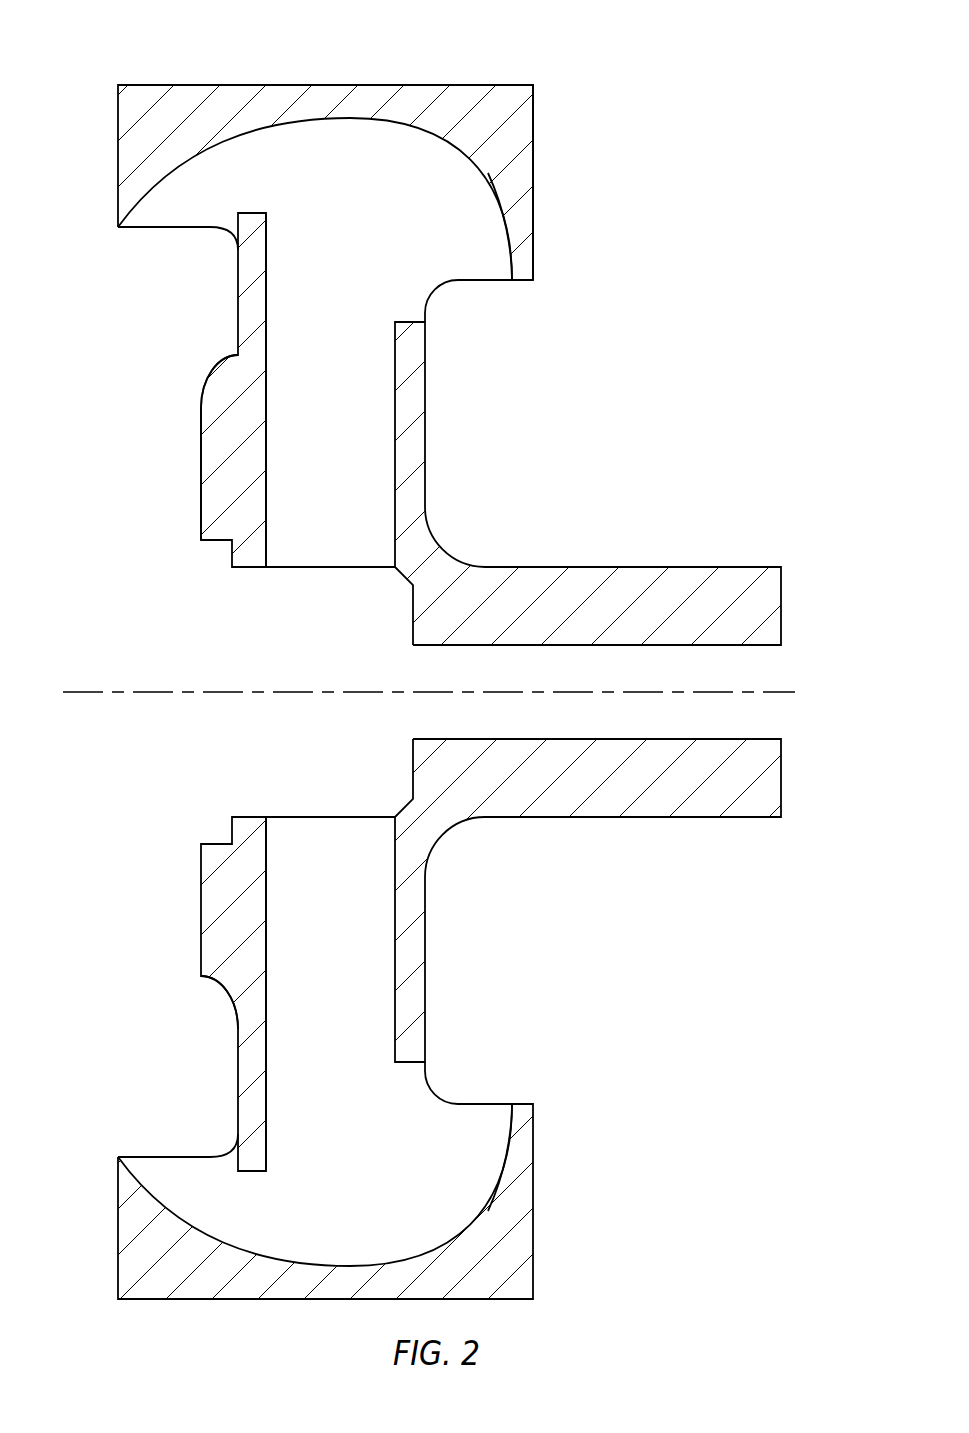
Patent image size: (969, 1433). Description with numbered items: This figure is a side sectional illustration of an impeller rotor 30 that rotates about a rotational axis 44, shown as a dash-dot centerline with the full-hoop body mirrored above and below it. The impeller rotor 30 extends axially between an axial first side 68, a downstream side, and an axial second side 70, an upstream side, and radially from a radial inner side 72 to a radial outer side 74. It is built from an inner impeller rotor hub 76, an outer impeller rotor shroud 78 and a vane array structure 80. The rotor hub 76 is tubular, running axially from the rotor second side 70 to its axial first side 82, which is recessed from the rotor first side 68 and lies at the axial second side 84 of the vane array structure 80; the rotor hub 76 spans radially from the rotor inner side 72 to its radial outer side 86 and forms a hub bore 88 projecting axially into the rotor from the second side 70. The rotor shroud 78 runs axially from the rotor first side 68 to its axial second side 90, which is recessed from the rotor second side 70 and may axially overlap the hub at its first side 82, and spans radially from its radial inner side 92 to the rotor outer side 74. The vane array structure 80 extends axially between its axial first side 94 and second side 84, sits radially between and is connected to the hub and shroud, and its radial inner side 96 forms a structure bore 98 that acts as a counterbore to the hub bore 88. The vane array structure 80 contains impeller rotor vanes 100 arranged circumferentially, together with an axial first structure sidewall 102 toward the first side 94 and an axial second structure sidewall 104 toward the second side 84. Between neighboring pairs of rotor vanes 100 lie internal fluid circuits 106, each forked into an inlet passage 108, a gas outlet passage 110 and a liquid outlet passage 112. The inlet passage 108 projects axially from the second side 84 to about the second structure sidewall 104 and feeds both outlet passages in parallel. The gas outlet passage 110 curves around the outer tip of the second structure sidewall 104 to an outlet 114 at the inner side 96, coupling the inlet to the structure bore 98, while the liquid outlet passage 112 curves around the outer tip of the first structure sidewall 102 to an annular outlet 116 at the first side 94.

The impeller rotor 30 is at (616, 60).
The rotational axis 44 is at (73, 695).
The axial first side of the impeller rotor 68 is at (118, 116).
The axial second side of the impeller rotor 70 is at (781, 590).
The radial inner side of the impeller rotor 72 is at (757, 645).
The radial outer side of the impeller rotor 74 is at (487, 85).
The inner impeller rotor hub 76 is at (708, 562).
The outer impeller rotor shroud 78 is at (168, 80).
The vane array structure 80 is at (173, 463).
The axial first side of the rotor hub 82 is at (410, 612).
The axial second side of the vane array structure 84 is at (427, 503).
The radial outer side of the rotor hub 86 is at (572, 567).
The hub bore 88 is at (616, 680).
The axial second side of the rotor shroud 90 is at (533, 112).
The radial inner side of the rotor shroud 92 is at (348, 120).
The axial first side of the vane array structure 94 is at (201, 515).
The radial inner side of the vane array structure 96 is at (250, 570).
The structure bore 98 is at (275, 680).
The impeller rotor vanes 100 is at (470, 295).
The axial first structure sidewall 102 is at (224, 357).
The axial second structure sidewall 104 is at (451, 428).
The internal fluid circuits 106 is at (492, 245).
The inlet passage 108 is at (463, 265).
The gas outlet passage 110 is at (353, 465).
The liquid outlet passage 112 is at (215, 210).
The outlet of the gas outlet passage 114 is at (316, 570).
The outlet of the liquid outlet passage 116 is at (198, 292).